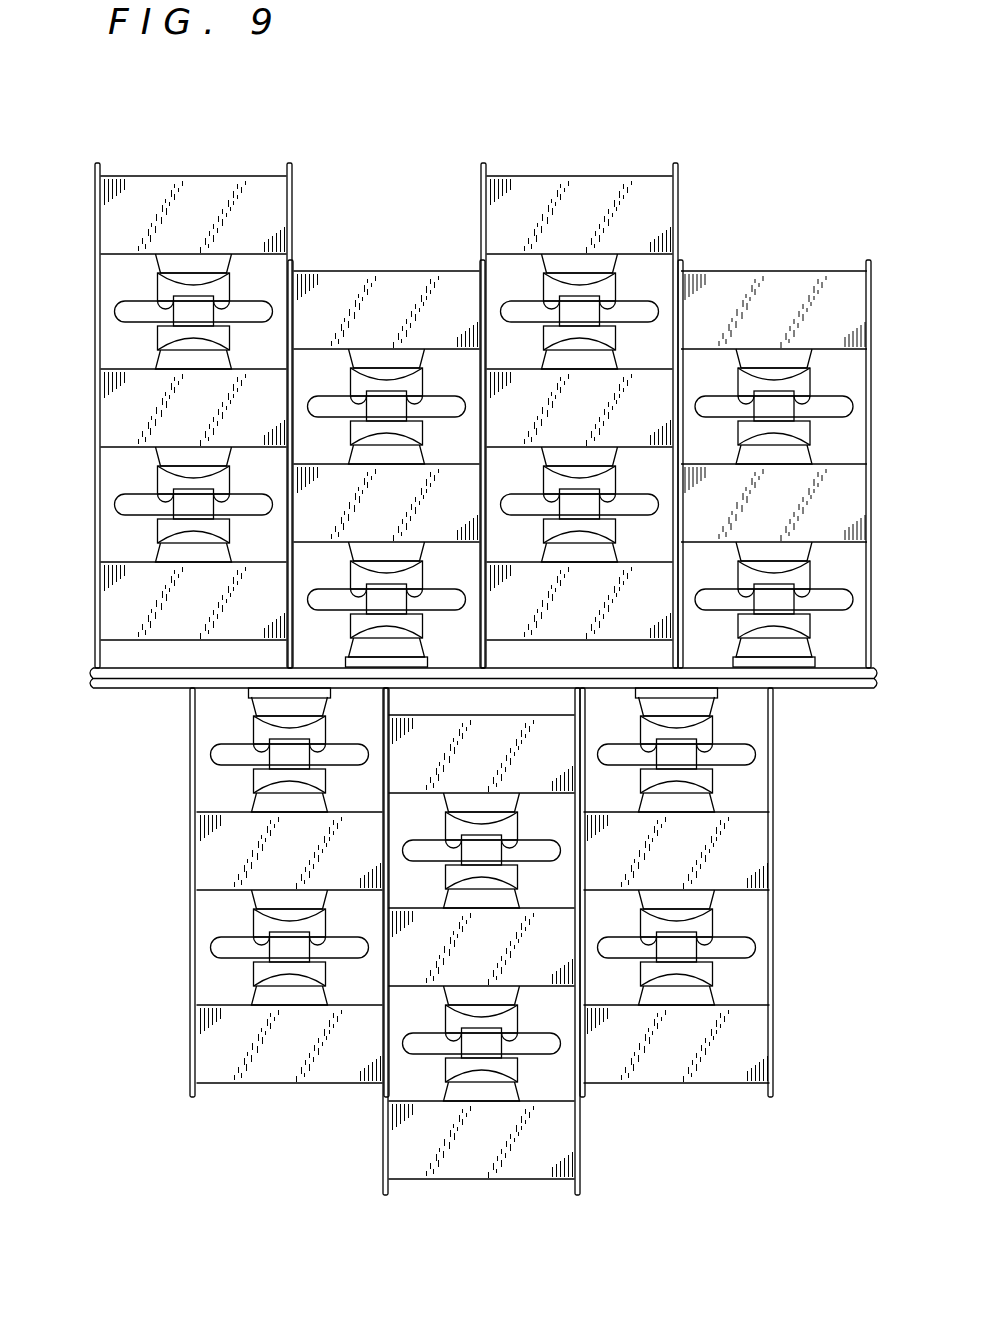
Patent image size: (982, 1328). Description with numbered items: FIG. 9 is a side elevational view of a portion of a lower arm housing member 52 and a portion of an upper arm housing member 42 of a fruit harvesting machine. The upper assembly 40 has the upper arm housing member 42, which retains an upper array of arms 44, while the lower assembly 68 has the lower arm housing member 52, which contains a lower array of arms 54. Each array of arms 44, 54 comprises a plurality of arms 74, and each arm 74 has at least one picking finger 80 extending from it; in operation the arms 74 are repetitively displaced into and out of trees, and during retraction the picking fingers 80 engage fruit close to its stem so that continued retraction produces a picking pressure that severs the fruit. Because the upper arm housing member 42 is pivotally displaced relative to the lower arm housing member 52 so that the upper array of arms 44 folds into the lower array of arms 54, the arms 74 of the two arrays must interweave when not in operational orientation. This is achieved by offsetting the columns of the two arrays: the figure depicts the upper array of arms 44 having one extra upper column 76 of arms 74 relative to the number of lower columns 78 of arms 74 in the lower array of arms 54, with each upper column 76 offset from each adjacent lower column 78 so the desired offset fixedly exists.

The upper column 76 is at (218, 129).
The lower column 78 is at (280, 1113).
The arm 74 is at (208, 293).
The picking finger 80 is at (264, 322).
The upper arm housing member 42 is at (94, 349).
The upper array of arms 44 is at (325, 443).
The upper assembly 40 is at (94, 567).
The lower arm housing member 52 is at (190, 915).
The lower assembly 68 is at (190, 957).
The lower array of arms 54 is at (548, 888).